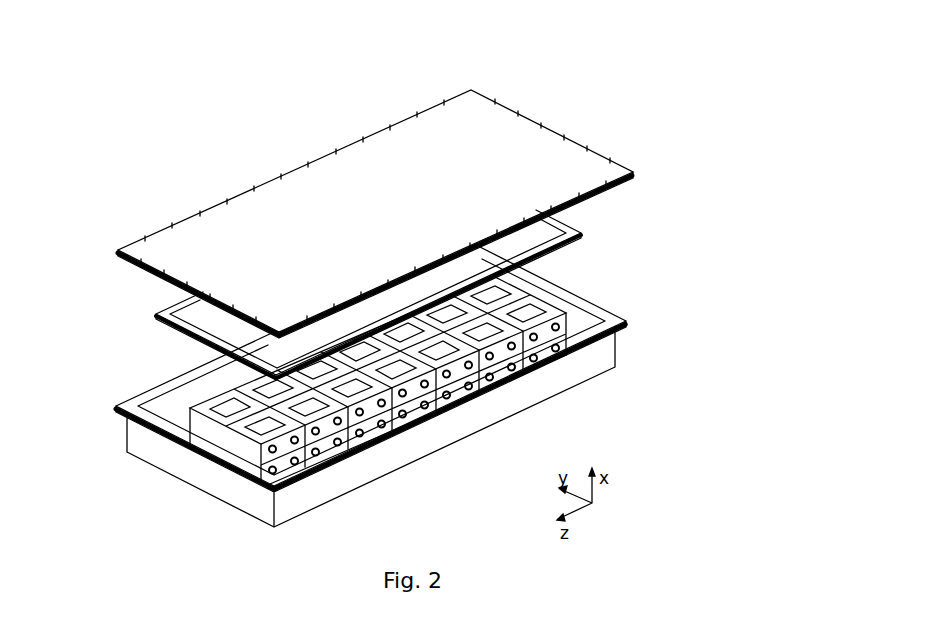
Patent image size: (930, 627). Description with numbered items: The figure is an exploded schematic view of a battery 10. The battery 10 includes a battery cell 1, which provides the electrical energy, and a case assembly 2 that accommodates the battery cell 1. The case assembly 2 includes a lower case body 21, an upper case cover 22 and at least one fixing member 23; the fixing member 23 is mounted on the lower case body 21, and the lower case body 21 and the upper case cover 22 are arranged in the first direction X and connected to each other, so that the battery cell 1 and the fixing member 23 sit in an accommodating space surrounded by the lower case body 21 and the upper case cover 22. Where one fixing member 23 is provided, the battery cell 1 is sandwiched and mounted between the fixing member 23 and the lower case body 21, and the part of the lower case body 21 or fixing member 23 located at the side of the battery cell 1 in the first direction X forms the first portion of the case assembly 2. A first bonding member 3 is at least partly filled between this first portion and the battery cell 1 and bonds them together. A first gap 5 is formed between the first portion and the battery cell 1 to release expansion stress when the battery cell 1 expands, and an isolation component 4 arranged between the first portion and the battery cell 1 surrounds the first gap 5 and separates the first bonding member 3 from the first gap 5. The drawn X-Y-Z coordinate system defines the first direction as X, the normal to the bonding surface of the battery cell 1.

The battery 10 is at (687, 48).
The case assembly 2 is at (715, 145).
The lower case body 21 is at (590, 300).
The upper case cover 22 is at (594, 165).
The fixing member 23 is at (560, 225).
The battery cell 1 is at (183, 447).
The first bonding member 3 is at (213, 457).
The isolation component 4 is at (243, 460).
The first gap 5 is at (327, 467).